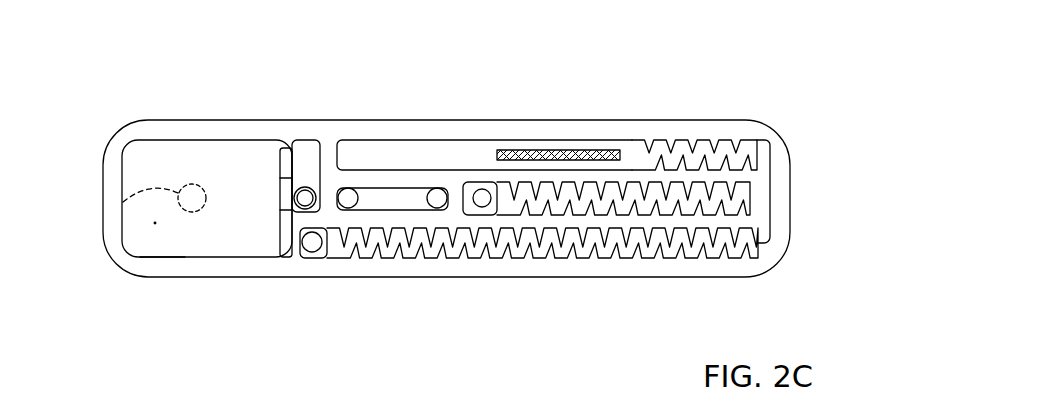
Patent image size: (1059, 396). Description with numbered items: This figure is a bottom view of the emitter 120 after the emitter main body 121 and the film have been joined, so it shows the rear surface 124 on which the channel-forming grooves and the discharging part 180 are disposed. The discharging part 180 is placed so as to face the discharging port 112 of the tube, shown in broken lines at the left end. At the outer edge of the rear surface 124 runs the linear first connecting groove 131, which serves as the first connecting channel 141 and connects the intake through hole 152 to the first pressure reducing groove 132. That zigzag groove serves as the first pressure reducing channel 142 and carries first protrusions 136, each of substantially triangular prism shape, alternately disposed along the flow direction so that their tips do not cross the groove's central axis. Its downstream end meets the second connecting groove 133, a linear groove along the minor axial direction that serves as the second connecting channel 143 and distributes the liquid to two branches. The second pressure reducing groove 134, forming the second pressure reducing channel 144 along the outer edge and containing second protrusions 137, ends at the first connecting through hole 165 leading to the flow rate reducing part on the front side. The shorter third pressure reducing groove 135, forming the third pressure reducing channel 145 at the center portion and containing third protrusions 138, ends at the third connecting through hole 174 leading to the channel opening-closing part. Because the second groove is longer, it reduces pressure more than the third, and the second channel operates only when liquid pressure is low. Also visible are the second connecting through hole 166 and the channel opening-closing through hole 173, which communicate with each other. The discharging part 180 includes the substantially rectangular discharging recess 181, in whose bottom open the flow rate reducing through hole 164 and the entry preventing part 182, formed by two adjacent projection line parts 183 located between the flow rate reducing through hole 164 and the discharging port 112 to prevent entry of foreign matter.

The discharging port 112 is at (122, 199).
The emitter 120 is at (465, 204).
The emitter main body 121 is at (763, 255).
The rear surface 124 is at (781, 174).
The first connecting groove 131 is at (484, 127).
The first connecting channel 141 is at (498, 142).
The first pressure reducing groove 132 is at (690, 107).
The first pressure reducing channel 142 is at (695, 107).
The second connecting groove 133 is at (692, 233).
The second connecting channel 143 is at (677, 233).
The second pressure reducing groove 134 is at (542, 276).
The second pressure reducing channel 144 is at (542, 276).
The third pressure reducing groove 135 is at (692, 189).
The third pressure reducing channel 145 is at (692, 233).
The first protrusions 136 is at (710, 140).
The second protrusions 137 is at (550, 250).
The third protrusions 138 is at (725, 213).
The intake through hole 152 is at (575, 150).
The flow rate reducing through hole 164 is at (300, 190).
The first connecting through hole 165 is at (316, 246).
The second connecting through hole 166 is at (385, 147).
The channel opening-closing through hole 173 is at (435, 190).
The third connecting through hole 174 is at (484, 200).
The discharging part 180 is at (216, 268).
The discharging recess 181 is at (152, 250).
The entry preventing part 182 is at (237, 249).
The projection line parts 183 is at (282, 158).